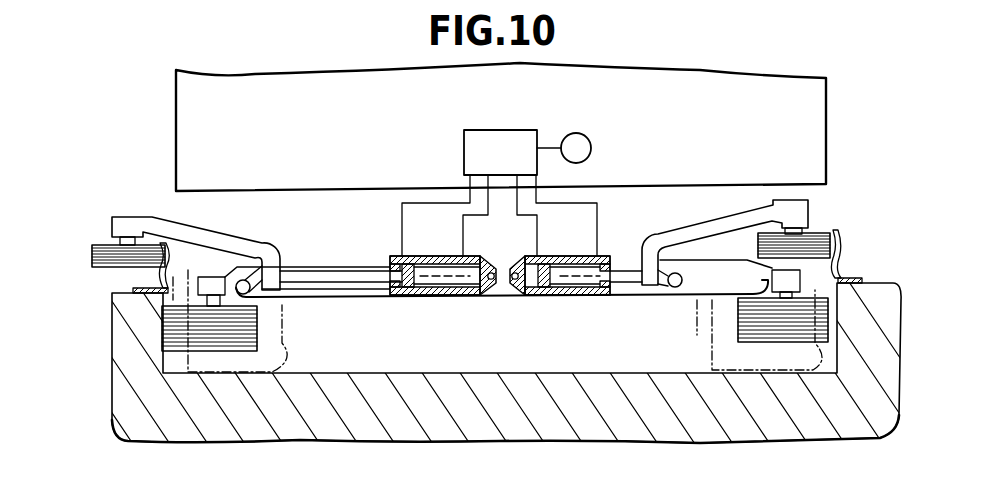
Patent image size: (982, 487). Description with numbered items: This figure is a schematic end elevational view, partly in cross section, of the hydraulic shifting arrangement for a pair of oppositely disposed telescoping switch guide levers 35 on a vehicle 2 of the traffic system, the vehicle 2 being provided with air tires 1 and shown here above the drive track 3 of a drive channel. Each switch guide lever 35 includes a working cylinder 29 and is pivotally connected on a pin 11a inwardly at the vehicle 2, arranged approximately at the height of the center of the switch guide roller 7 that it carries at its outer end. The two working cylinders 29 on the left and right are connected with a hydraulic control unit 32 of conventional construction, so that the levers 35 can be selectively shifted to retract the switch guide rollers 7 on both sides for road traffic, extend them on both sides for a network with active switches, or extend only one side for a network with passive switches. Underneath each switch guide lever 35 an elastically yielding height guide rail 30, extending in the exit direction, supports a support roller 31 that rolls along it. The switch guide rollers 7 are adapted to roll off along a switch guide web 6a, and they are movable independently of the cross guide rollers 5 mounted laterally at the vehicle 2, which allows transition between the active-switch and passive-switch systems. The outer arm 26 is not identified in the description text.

The air tires 1 is at (300, 308).
The vehicle 2 is at (728, 82).
The drive track 3 is at (462, 373).
The cross guide roller 5 is at (257, 340).
The switch guide web 6a is at (178, 262).
The switch guide roller 7 is at (105, 245).
The pin 11a is at (516, 282).
The lever arm 26 is at (236, 238).
The working cylinder 29 is at (434, 266).
The height guide rail 30 is at (346, 303).
The support roller 31 is at (243, 280).
The hydraulic control unit 32 is at (470, 147).
The telescoping switch guide lever 35 is at (383, 295).